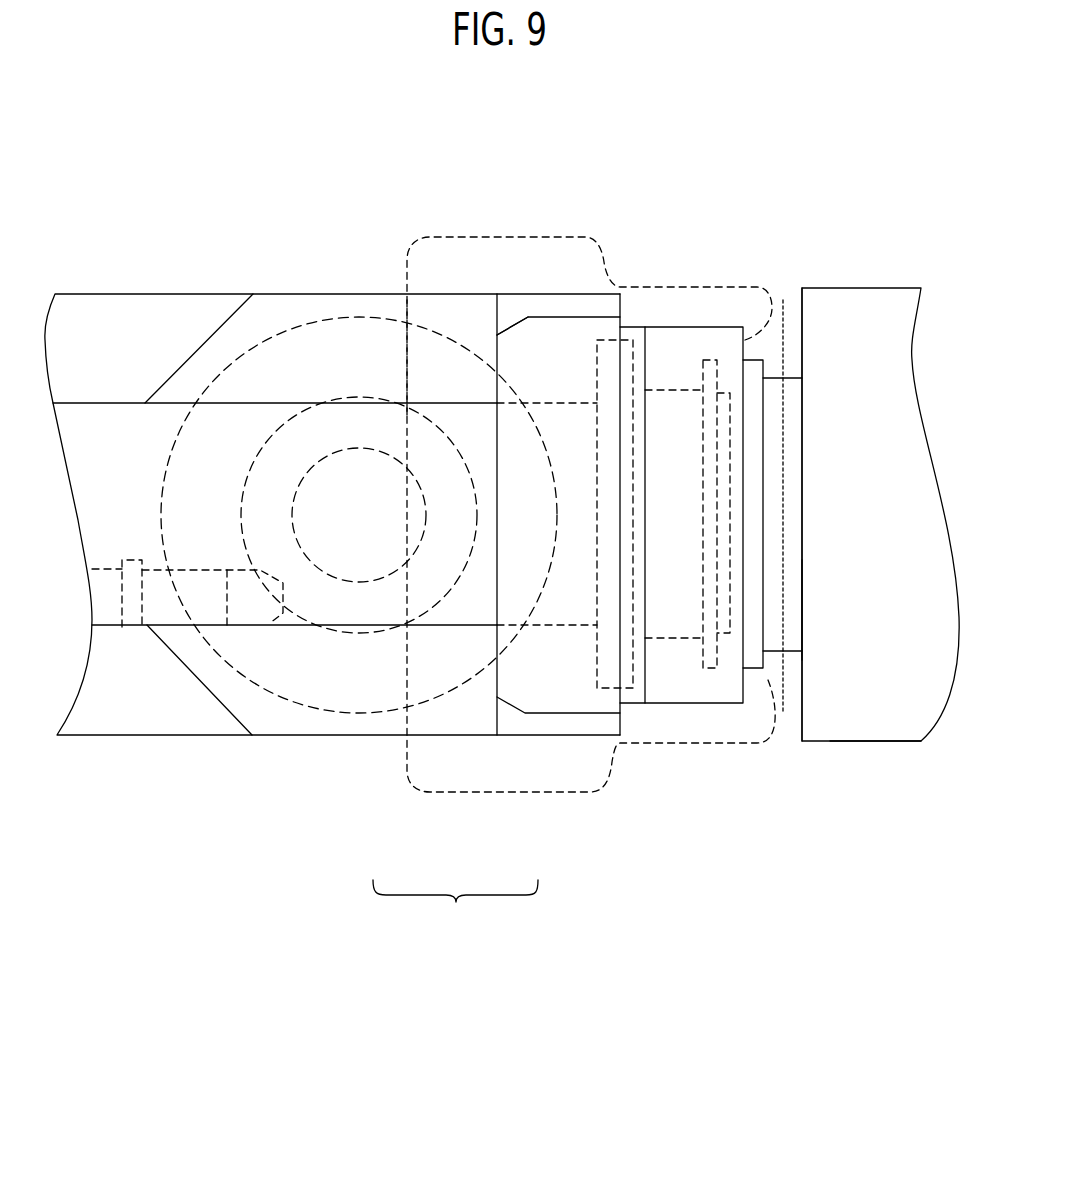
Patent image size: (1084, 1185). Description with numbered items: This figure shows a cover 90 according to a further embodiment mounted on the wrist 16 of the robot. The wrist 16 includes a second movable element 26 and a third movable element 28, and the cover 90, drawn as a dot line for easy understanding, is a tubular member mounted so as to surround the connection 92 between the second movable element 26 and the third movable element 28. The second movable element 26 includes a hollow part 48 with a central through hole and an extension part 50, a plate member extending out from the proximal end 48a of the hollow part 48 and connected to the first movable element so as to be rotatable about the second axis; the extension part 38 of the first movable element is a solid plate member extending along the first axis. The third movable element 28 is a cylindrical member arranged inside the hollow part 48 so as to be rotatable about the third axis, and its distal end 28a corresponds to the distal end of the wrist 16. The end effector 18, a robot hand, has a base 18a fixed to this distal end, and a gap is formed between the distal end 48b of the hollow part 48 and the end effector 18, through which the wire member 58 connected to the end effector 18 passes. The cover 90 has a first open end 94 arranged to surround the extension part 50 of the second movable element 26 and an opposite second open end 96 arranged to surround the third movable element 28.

The wrist 16 is at (266, 886).
The end effector 18 is at (911, 742).
The base 18a is at (865, 692).
The second movable element 26 is at (455, 908).
The third movable element 28 is at (800, 422).
The distal end of the third movable element 28a is at (805, 578).
The extension part 38 is at (148, 736).
The hollow part 48 is at (545, 693).
The proximal end of the hollow part 48a is at (497, 350).
The distal end of the hollow part 48b is at (764, 290).
The extension part 50 is at (368, 690).
The wire member 58 is at (115, 443).
The cover 90 is at (557, 237).
The connection 92 is at (767, 664).
The first open end 94 is at (403, 360).
The second open end 96 is at (787, 343).